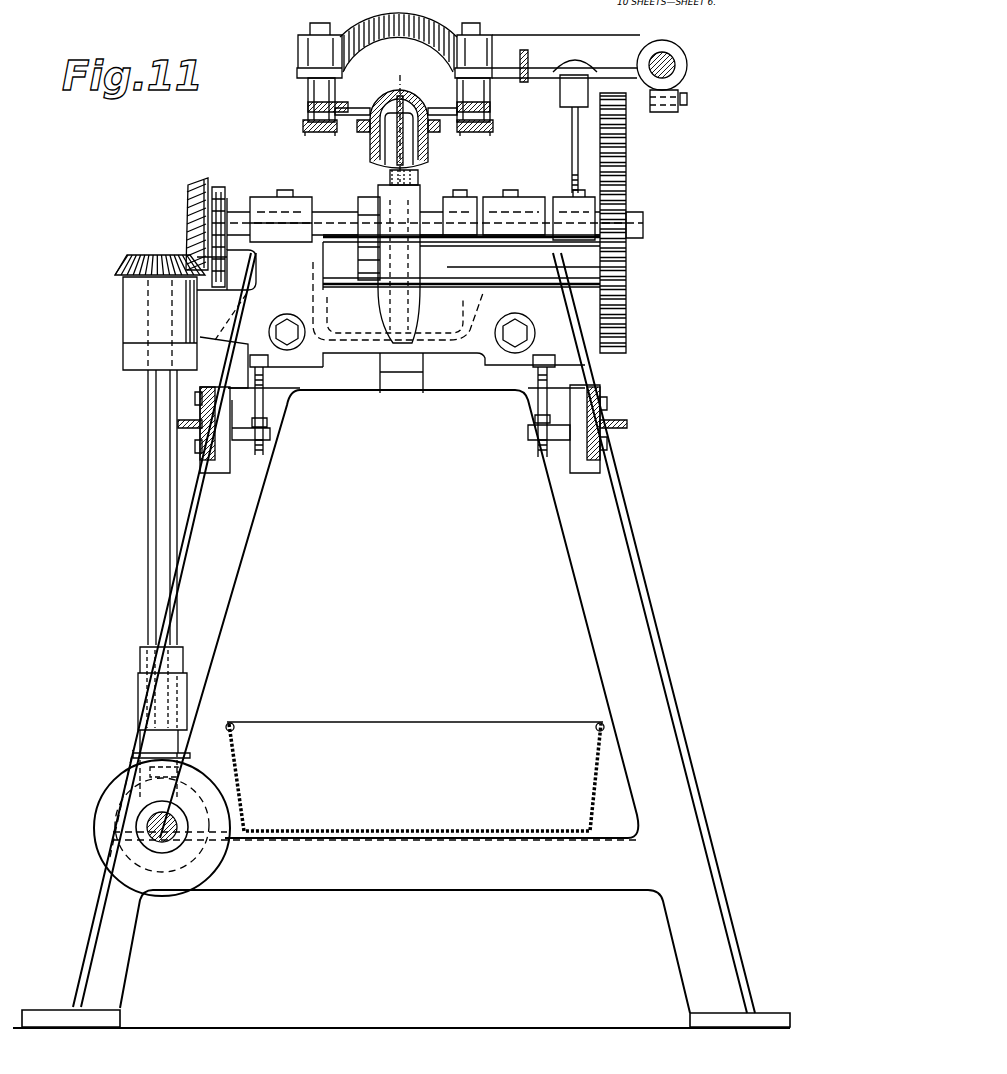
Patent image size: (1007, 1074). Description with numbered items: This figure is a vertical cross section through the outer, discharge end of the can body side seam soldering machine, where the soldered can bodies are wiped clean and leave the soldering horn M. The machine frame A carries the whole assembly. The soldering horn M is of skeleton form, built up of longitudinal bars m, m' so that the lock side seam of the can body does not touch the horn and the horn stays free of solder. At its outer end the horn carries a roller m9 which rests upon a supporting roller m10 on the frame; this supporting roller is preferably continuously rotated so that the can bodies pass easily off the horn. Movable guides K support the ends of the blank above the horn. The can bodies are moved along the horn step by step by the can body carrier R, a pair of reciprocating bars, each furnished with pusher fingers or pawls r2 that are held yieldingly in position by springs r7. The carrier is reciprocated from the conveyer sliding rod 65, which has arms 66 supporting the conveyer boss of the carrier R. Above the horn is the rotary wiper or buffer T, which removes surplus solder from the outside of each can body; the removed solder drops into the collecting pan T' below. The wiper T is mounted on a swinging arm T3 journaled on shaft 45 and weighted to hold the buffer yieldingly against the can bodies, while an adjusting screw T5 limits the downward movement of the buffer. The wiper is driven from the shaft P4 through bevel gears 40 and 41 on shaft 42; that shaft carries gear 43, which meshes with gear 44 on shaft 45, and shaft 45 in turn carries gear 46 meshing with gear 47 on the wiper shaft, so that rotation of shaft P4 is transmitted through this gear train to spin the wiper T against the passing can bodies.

The frame A is at (620, 550).
The rotary wiper T is at (385, 397).
The collecting pan T' is at (415, 776).
The swinging arm T3 is at (456, 287).
The adjusting screw T5 is at (572, 147).
The soldering horn M is at (397, 95).
The longitudinal bar m is at (400, 116).
The longitudinal bar m' is at (403, 139).
The roller m9 is at (382, 160).
The supporting roller m10 is at (420, 177).
The can body carrier R is at (306, 124).
The movable guide K is at (498, 125).
The can body pusher finger r2 is at (397, 101).
The spring r7 is at (498, 107).
The bevel gear 40 is at (110, 777).
The bevel gear 41 is at (137, 755).
The shaft 42 is at (152, 492).
The gear 43 is at (122, 270).
The gear 44 is at (197, 192).
The shaft 45 is at (333, 193).
The gear 46 is at (625, 155).
The gear 47 is at (665, 279).
The conveyer sliding rod 65 is at (663, 52).
The arm 66 is at (502, 42).
The shaft P4 is at (150, 816).